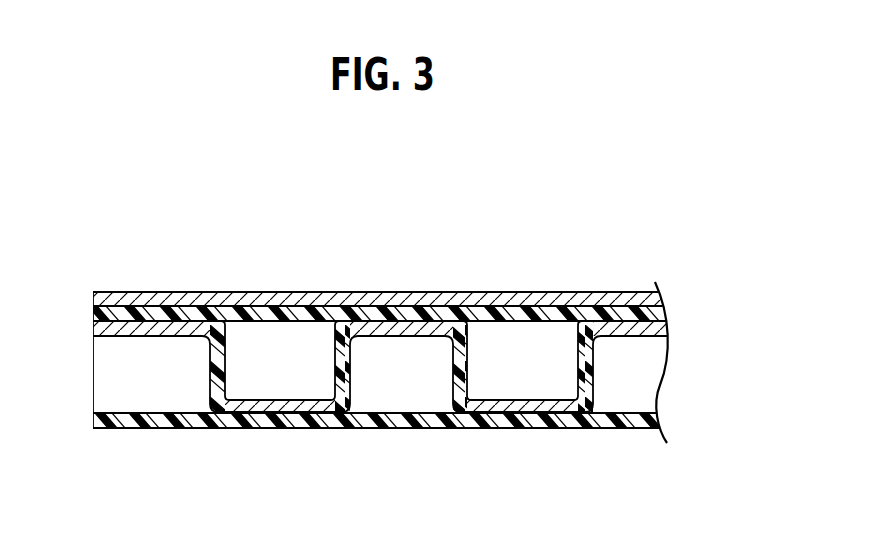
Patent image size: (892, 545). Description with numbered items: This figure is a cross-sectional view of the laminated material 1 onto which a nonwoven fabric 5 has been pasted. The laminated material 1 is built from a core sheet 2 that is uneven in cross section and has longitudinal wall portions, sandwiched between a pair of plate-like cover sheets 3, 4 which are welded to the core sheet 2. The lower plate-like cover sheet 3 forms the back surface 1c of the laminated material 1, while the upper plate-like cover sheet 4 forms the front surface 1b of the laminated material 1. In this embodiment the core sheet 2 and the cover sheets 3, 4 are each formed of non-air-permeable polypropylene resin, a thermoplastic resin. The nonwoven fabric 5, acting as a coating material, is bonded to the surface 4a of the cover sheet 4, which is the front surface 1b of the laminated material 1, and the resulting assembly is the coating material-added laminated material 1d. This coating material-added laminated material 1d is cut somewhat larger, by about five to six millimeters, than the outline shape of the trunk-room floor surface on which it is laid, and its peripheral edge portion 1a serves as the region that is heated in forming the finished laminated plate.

The laminated material 1 is at (753, 295).
The peripheral edge portion 1a is at (207, 293).
The front surface 1b is at (388, 255).
The back surface 1c is at (396, 429).
The coating material-added laminated material 1d is at (512, 250).
The core sheet 2 is at (652, 369).
The plate-like cover sheet 3 is at (647, 421).
The plate-like cover sheet 4 is at (660, 315).
The surface of the cover sheet 4a is at (400, 305).
The nonwoven fabric 5 is at (303, 305).